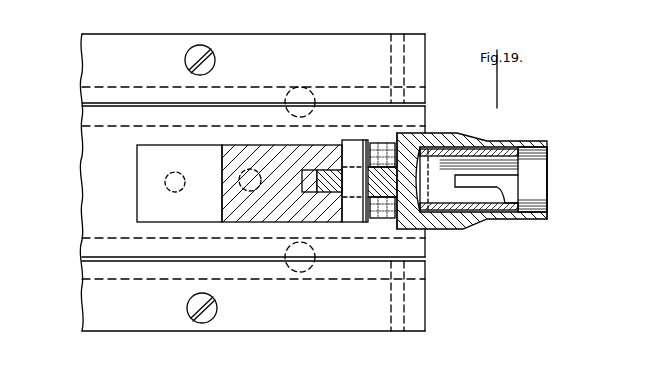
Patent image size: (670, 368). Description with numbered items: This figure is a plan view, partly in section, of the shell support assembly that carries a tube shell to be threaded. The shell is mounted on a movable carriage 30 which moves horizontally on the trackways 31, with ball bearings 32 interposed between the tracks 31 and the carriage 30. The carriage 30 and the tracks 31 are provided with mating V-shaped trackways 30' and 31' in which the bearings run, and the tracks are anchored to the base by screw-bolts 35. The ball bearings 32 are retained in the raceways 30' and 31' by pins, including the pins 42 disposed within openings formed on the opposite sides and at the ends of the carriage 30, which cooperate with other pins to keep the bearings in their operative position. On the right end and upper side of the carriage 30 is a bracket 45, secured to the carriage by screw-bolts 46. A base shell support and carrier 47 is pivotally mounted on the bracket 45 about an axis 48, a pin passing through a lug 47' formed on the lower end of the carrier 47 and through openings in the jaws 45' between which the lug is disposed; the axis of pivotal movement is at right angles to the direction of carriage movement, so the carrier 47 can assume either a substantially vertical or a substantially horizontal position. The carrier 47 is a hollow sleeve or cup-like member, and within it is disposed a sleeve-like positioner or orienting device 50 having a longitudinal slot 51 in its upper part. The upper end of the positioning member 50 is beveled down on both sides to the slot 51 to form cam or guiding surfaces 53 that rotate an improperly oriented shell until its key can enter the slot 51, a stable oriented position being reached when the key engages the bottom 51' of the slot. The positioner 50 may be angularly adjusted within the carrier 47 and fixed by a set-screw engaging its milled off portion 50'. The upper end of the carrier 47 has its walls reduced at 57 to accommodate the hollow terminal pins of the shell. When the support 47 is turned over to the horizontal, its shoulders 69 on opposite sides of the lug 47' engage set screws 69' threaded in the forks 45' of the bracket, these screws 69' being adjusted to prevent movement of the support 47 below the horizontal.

The movable carriage 30 is at (230, 181).
The V-shaped trackway of the carriage 30' is at (253, 182).
The trackway 31 is at (253, 185).
The V-shaped trackway of the track 31' is at (253, 170).
The ball bearing 32 is at (300, 88).
The screw-bolt 35 is at (201, 51).
The pin 42 is at (405, 49).
The bracket 45 is at (161, 185).
The jaws 45' is at (291, 181).
The screw-bolt 46 is at (165, 182).
The shell support and carrier 47 is at (544, 164).
The lug 47' is at (322, 161).
The axis 48 is at (355, 224).
The positioner or orienting device 50 is at (469, 225).
The milled off portion 50' is at (450, 162).
The longitudinal slot 51 is at (473, 137).
The bottom of the slot 51' is at (479, 144).
The cam or guiding surface 53 is at (500, 200).
The reduced wall portion 57 is at (544, 220).
The shoulder 69 is at (450, 204).
The set screw 69' is at (432, 177).